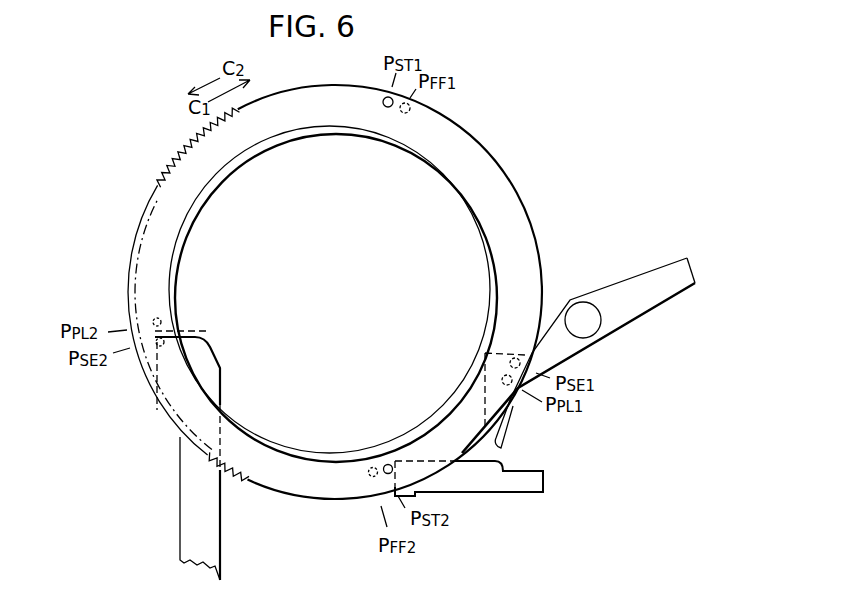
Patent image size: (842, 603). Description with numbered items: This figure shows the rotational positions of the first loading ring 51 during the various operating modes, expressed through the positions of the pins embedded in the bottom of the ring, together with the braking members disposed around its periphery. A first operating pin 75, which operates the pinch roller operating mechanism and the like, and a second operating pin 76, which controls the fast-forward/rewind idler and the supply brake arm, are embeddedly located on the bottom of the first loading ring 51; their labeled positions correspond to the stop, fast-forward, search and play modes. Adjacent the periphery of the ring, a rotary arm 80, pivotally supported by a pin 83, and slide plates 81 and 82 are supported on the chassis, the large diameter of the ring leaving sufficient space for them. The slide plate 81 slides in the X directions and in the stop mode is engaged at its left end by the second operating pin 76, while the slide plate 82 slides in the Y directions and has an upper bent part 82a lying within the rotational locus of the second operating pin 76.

The first loading ring 51 is at (483, 149).
The first operating pin 75 is at (403, 114).
The second operating pin 76 is at (157, 318).
The rotary arm 80 is at (613, 328).
The slide plate 81 is at (470, 489).
The slide plate 82 is at (180, 495).
The upper bent part 82a is at (200, 331).
The pin 83 is at (578, 312).